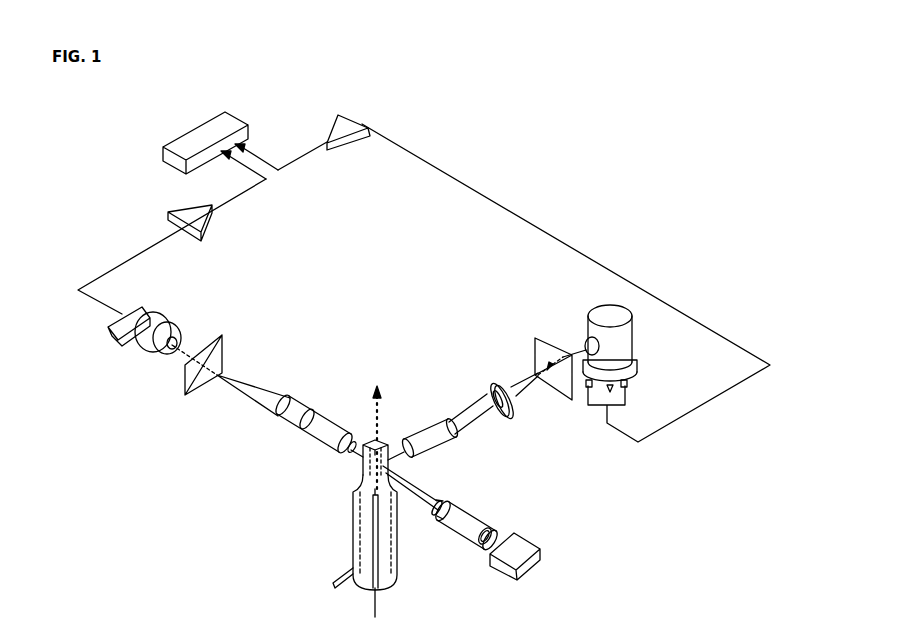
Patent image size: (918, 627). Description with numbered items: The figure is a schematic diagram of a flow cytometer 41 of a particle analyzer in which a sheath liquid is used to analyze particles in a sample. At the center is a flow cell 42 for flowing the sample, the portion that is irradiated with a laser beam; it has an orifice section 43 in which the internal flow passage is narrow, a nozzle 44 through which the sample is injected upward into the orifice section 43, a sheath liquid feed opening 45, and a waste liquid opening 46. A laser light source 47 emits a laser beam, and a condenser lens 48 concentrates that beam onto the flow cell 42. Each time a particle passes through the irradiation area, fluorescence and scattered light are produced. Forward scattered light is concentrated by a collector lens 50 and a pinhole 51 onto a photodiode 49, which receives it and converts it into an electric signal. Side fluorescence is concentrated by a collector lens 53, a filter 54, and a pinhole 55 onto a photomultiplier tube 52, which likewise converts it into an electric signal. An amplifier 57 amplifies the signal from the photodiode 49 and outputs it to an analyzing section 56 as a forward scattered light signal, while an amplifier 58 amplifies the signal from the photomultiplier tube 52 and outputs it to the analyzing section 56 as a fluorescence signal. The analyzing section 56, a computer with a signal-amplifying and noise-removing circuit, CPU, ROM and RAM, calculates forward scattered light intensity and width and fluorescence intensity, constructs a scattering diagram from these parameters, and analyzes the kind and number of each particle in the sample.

The flow cytometer 41 is at (540, 150).
The flow cell 42 is at (398, 548).
The orifice section 43 is at (360, 472).
The nozzle 44 is at (380, 590).
The sheath liquid feed opening 45 is at (331, 588).
The waste liquid opening 46 is at (388, 435).
The laser light source 47 is at (510, 567).
The condenser lens 48 is at (473, 520).
The photodiode 49 is at (172, 323).
The collector lens 50 is at (328, 427).
The pinhole 51 is at (213, 348).
The photomultiplier tube 52 is at (625, 338).
The collector lens 53 is at (420, 430).
The filter 54 is at (490, 380).
The pinhole 55 is at (542, 338).
The analyzing section 56 is at (197, 138).
The amplifier 57 is at (208, 220).
The amplifier 58 is at (342, 132).